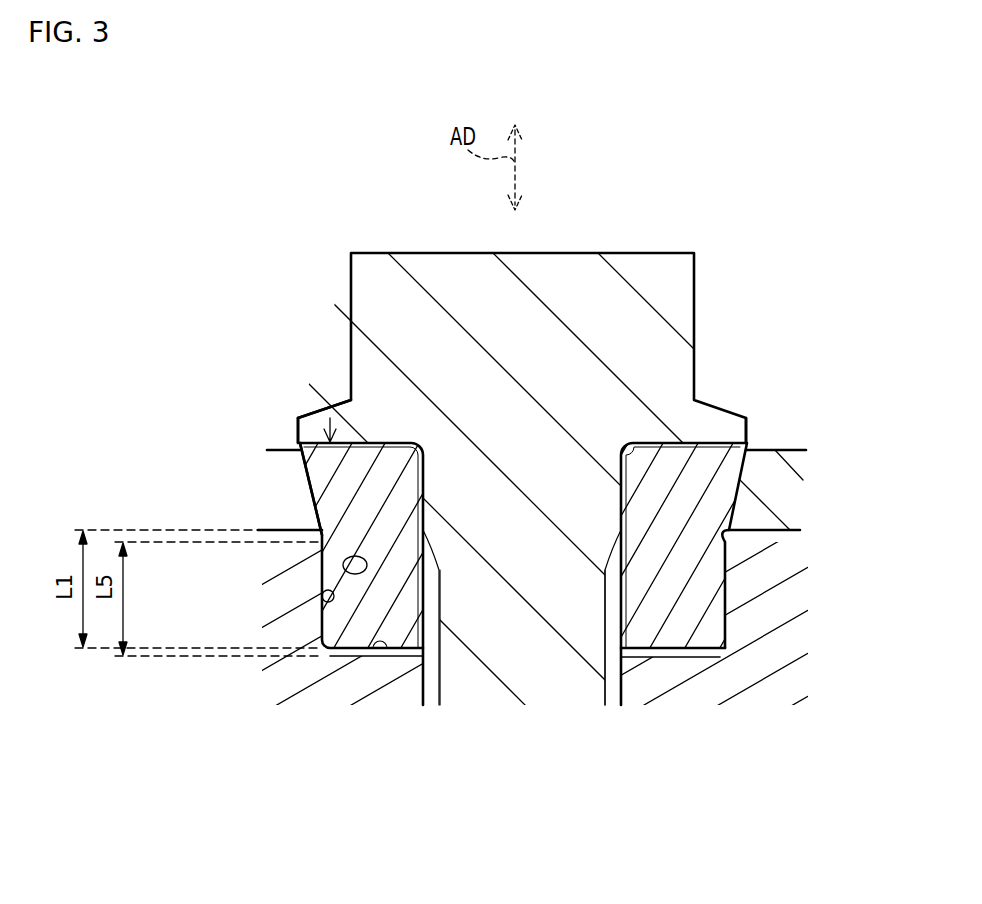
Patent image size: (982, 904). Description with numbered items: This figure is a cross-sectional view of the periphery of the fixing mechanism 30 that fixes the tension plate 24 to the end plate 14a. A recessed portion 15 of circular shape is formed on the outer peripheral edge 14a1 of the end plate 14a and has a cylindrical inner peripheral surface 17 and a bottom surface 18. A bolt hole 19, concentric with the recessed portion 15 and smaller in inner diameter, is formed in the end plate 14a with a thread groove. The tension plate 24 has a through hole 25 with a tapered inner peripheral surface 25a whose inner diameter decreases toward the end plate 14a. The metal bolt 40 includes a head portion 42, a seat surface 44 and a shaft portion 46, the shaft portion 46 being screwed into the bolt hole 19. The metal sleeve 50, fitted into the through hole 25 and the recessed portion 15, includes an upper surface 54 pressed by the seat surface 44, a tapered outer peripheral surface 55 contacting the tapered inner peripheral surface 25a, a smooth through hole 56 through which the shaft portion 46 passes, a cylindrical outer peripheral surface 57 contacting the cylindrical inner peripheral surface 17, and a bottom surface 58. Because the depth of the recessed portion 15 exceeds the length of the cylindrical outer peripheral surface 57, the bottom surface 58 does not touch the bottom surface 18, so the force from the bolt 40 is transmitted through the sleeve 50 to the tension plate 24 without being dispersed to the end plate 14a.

The fixing mechanism 30 is at (241, 267).
The bolt 40 is at (527, 483).
The head portion 42 is at (688, 298).
The seat surface 44 is at (724, 460).
The shaft portion 46 is at (497, 662).
The sleeve 50 is at (367, 443).
The upper surface 54 is at (380, 442).
The tapered outer peripheral surface 55 is at (312, 500).
The through hole 56 is at (603, 652).
The cylindrical outer peripheral surface 57 is at (320, 633).
The bottom surface 58 is at (342, 652).
The tension plate 24 is at (274, 451).
The through hole 25 is at (298, 442).
The tapered inner peripheral surface 25a is at (292, 530).
The recessed portion 15 is at (344, 567).
The cylindrical inner peripheral surface 17 is at (322, 597).
The bottom surface 18 is at (382, 646).
The bolt hole 19 is at (438, 688).
The end plate 14a is at (300, 700).
The outer peripheral edge 14a1 is at (765, 530).